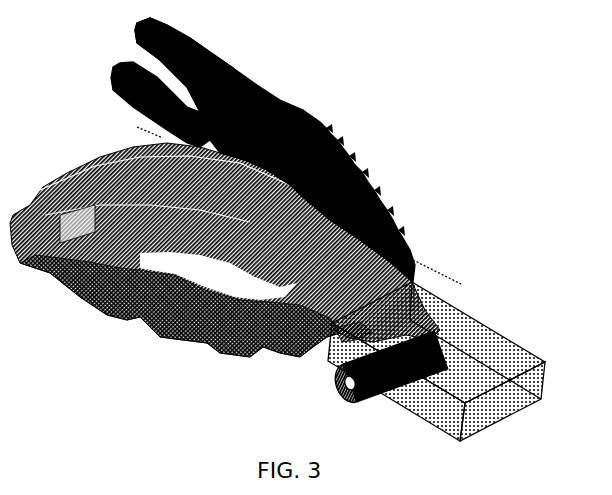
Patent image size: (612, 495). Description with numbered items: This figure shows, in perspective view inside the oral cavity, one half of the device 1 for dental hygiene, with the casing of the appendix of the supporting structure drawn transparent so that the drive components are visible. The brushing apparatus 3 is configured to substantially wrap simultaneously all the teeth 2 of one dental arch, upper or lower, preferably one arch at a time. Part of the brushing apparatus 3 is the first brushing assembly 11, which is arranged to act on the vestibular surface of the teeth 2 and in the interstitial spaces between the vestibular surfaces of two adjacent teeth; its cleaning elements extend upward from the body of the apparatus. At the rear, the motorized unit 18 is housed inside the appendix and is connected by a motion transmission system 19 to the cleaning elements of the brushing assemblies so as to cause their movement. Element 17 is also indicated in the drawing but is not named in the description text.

The device 1 is at (38, 189).
The teeth 2 is at (175, 343).
The brushing apparatus 3 is at (307, 113).
The first brushing assembly 11 is at (233, 70).
The connector 17 is at (350, 339).
The motorized unit 18 is at (493, 327).
The motion transmission system 19 is at (356, 402).